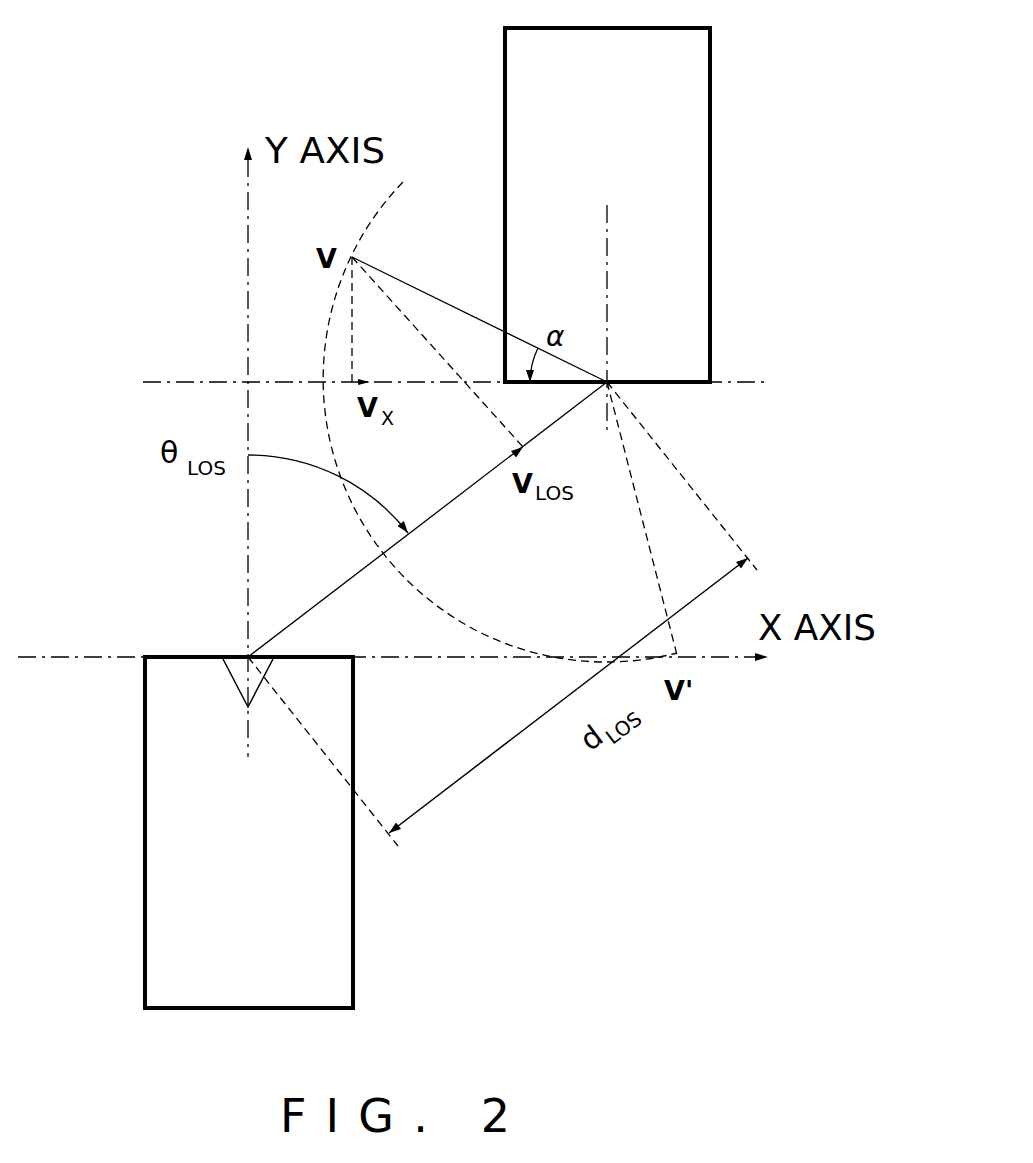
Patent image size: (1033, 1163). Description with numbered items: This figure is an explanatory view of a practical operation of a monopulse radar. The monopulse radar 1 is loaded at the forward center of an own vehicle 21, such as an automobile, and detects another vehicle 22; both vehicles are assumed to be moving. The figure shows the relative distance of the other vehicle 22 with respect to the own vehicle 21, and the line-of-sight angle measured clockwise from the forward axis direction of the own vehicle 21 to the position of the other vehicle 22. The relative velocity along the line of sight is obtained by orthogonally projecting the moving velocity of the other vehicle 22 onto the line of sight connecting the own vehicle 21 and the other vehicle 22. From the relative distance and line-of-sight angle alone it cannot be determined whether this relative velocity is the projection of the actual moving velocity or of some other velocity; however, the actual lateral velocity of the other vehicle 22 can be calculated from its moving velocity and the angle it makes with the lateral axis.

The monopulse radar 1 is at (240, 655).
The own vehicle 21 is at (353, 965).
The other vehicle 22 is at (710, 235).